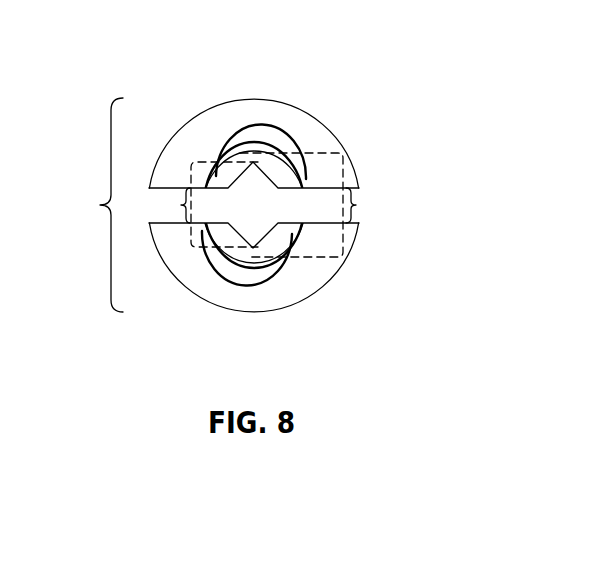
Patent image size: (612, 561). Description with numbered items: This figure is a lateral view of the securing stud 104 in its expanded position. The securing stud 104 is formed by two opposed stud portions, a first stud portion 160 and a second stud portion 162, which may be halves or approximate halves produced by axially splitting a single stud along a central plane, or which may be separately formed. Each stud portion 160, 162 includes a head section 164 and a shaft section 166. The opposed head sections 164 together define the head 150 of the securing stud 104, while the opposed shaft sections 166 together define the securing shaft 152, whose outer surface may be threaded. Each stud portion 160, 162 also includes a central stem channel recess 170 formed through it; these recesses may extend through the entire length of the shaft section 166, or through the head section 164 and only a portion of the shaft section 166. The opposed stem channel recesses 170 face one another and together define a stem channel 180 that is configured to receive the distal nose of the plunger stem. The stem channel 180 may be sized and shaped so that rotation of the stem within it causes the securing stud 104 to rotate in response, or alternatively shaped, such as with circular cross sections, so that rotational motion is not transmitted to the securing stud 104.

The securing stud 104 is at (175, 44).
The head 150 is at (87, 205).
The securing shaft 152 is at (371, 205).
The first stud portion 160 is at (175, 280).
The second stud portion 162 is at (292, 98).
The head section 164 is at (343, 143).
The shaft section 166 is at (262, 146).
The stem channel recess 170 is at (253, 174).
The stem channel 180 is at (163, 206).